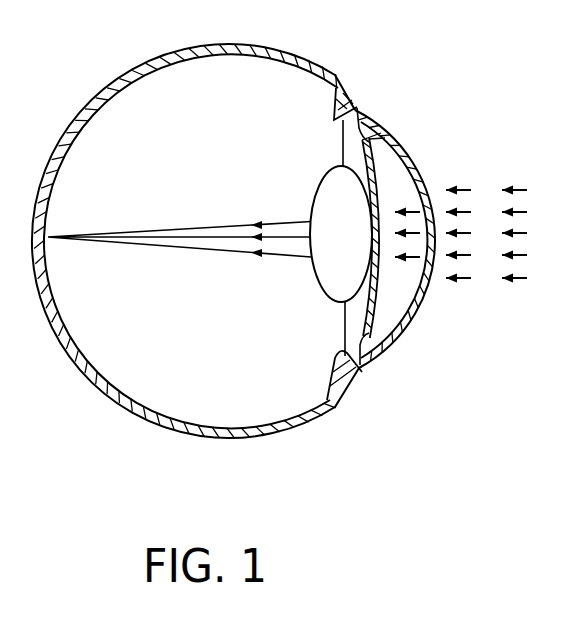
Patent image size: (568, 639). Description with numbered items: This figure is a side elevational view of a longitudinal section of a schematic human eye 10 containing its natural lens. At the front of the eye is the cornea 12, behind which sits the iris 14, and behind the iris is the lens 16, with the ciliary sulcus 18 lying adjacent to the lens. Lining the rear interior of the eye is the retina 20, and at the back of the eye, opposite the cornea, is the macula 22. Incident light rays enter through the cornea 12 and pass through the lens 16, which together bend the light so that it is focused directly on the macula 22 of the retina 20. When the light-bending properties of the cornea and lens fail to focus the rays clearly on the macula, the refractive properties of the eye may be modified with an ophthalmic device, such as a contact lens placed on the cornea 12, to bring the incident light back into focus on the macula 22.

The human eye 10 is at (318, 52).
The cornea 12 is at (418, 168).
The iris 14 is at (386, 161).
The lens 16 is at (309, 282).
The ciliary sulcus 18 is at (316, 369).
The retina 20 is at (110, 113).
The macula 22 is at (58, 258).